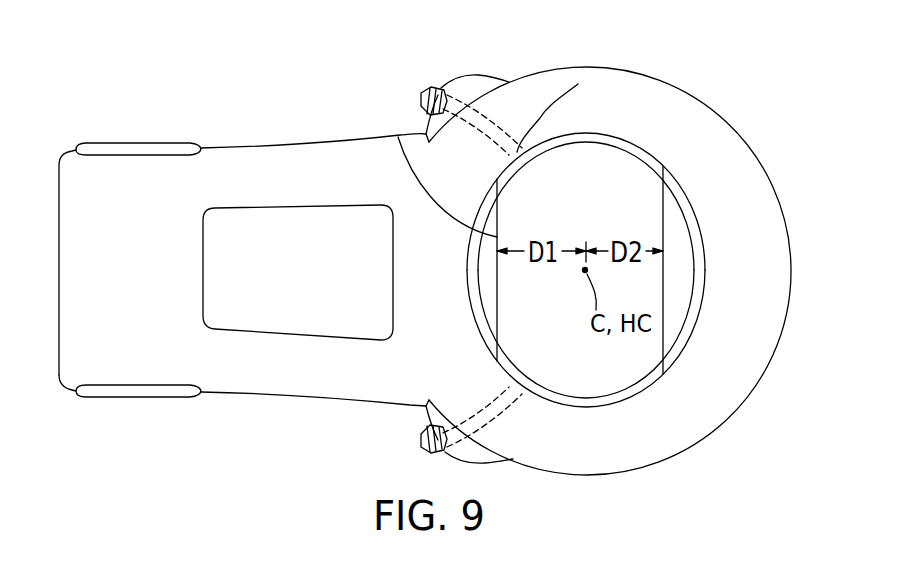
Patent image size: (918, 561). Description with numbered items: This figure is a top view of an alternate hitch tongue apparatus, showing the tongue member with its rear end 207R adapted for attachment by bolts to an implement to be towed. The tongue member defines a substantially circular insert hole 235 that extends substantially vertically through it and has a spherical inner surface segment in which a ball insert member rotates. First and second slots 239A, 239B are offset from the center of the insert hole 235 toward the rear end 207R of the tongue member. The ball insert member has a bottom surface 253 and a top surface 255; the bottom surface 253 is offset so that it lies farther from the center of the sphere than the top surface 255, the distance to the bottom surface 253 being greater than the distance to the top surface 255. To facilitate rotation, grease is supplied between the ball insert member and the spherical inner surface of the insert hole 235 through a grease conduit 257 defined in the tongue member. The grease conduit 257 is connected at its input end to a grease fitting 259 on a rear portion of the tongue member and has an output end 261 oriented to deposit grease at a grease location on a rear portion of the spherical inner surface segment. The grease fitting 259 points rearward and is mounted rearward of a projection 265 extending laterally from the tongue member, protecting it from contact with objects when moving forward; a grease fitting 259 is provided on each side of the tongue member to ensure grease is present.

The rear end 207R is at (103, 147).
The bottom surface 253 is at (398, 137).
The projection 265 is at (470, 76).
The grease fitting 259 is at (438, 88).
The grease conduit 257 is at (494, 124).
The output end 261 is at (578, 84).
The insert hole 235 is at (682, 262).
The first slot 239A is at (610, 130).
The second slot 239B is at (607, 407).
The top surface 255 is at (665, 282).